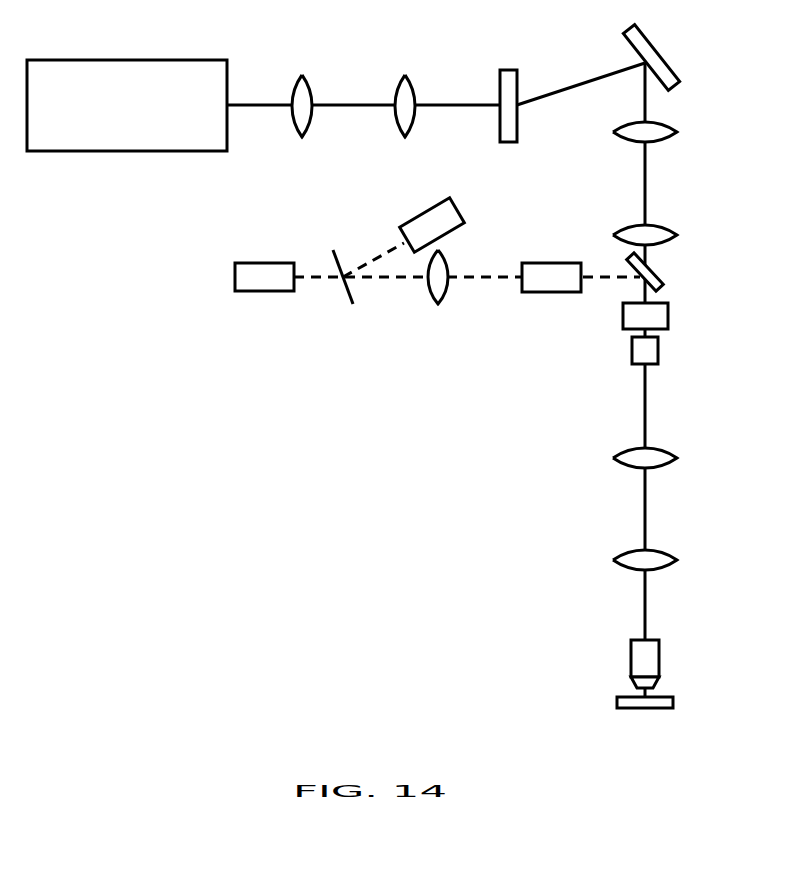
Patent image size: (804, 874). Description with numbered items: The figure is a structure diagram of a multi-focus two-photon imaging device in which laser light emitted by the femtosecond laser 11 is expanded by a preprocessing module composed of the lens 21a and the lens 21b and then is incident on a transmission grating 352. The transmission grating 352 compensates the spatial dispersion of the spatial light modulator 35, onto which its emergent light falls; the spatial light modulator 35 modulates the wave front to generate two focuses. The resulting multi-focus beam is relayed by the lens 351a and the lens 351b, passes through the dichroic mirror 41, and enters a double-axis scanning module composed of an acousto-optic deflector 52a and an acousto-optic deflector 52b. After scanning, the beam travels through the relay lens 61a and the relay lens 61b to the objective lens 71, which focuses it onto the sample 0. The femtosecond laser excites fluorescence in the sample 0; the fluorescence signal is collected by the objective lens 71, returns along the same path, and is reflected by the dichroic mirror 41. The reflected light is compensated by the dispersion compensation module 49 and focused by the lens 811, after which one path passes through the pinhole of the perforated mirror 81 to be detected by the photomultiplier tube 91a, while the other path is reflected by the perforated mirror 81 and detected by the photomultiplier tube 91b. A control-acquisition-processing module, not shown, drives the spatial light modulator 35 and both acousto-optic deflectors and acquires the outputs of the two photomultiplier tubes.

The femtosecond laser 11 is at (130, 60).
The lens 21a is at (303, 75).
The lens 21b is at (408, 75).
The transmission grating 352 is at (507, 70).
The spatial light modulator 35 is at (657, 50).
The lens 351a is at (678, 136).
The lens 351b is at (675, 232).
The dichroic mirror 41 is at (663, 284).
The dispersion compensation module 49 is at (576, 263).
The acousto-optic deflector 52a is at (623, 303).
The acousto-optic deflector 52b is at (632, 350).
The relay lens 61a is at (613, 450).
The relay lens 61b is at (613, 552).
The objective lens 71 is at (631, 650).
The sample 0 is at (617, 695).
The photomultiplier tube 91a is at (235, 277).
The photomultiplier tube 91b is at (459, 213).
The perforated mirror 81 is at (351, 302).
The lens 811 is at (433, 302).